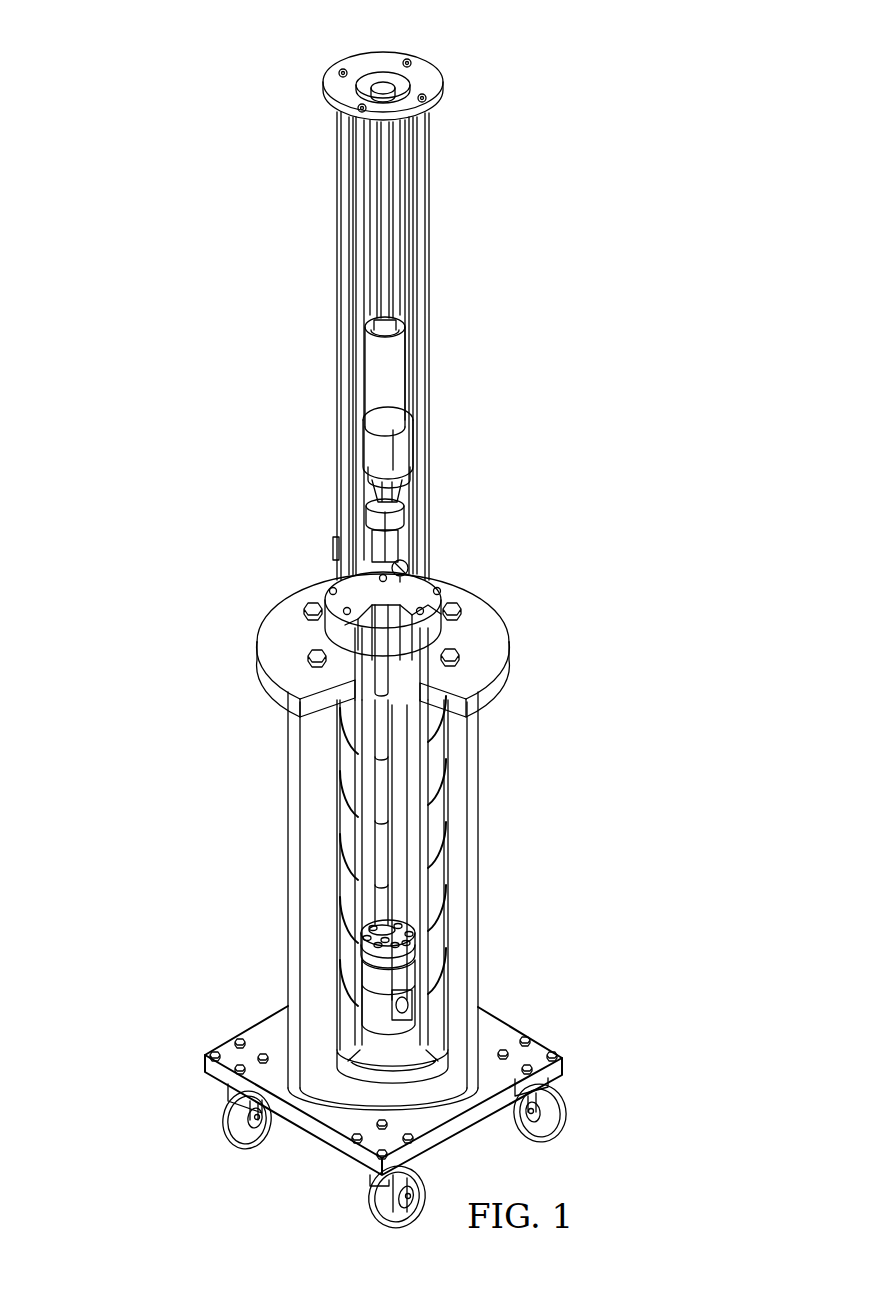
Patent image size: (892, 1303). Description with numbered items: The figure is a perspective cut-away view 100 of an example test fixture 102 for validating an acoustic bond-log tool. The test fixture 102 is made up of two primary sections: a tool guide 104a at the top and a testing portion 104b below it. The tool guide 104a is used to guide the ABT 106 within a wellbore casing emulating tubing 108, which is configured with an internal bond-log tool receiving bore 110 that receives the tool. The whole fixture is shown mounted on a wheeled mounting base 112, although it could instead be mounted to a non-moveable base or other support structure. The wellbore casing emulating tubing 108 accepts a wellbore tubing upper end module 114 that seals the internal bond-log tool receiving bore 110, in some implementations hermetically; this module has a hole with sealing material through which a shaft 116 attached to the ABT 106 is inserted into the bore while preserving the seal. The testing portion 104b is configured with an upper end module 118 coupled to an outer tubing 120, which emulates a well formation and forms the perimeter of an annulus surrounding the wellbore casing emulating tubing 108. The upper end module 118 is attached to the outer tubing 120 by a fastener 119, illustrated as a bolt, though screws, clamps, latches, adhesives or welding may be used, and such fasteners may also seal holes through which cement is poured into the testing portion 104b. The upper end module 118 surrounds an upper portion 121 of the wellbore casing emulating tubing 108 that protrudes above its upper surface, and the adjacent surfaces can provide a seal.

The cut-away view 100 is at (122, 84).
The test fixture 102 is at (317, 129).
The tool guide 104a is at (317, 291).
The testing portion 104b is at (204, 891).
The ABT 106 is at (365, 955).
The wellbore casing emulating tubing 108 is at (428, 828).
The internal bond-log tool receiving bore 110 is at (385, 893).
The wheeled mounting base 112 is at (545, 1015).
The wellbore tubing upper end module 114 is at (330, 583).
The shaft 116 is at (385, 545).
The upper end module 118 is at (487, 605).
The fastener 119 is at (470, 660).
The outer tubing 120 is at (480, 768).
The upper portion 121 is at (328, 633).